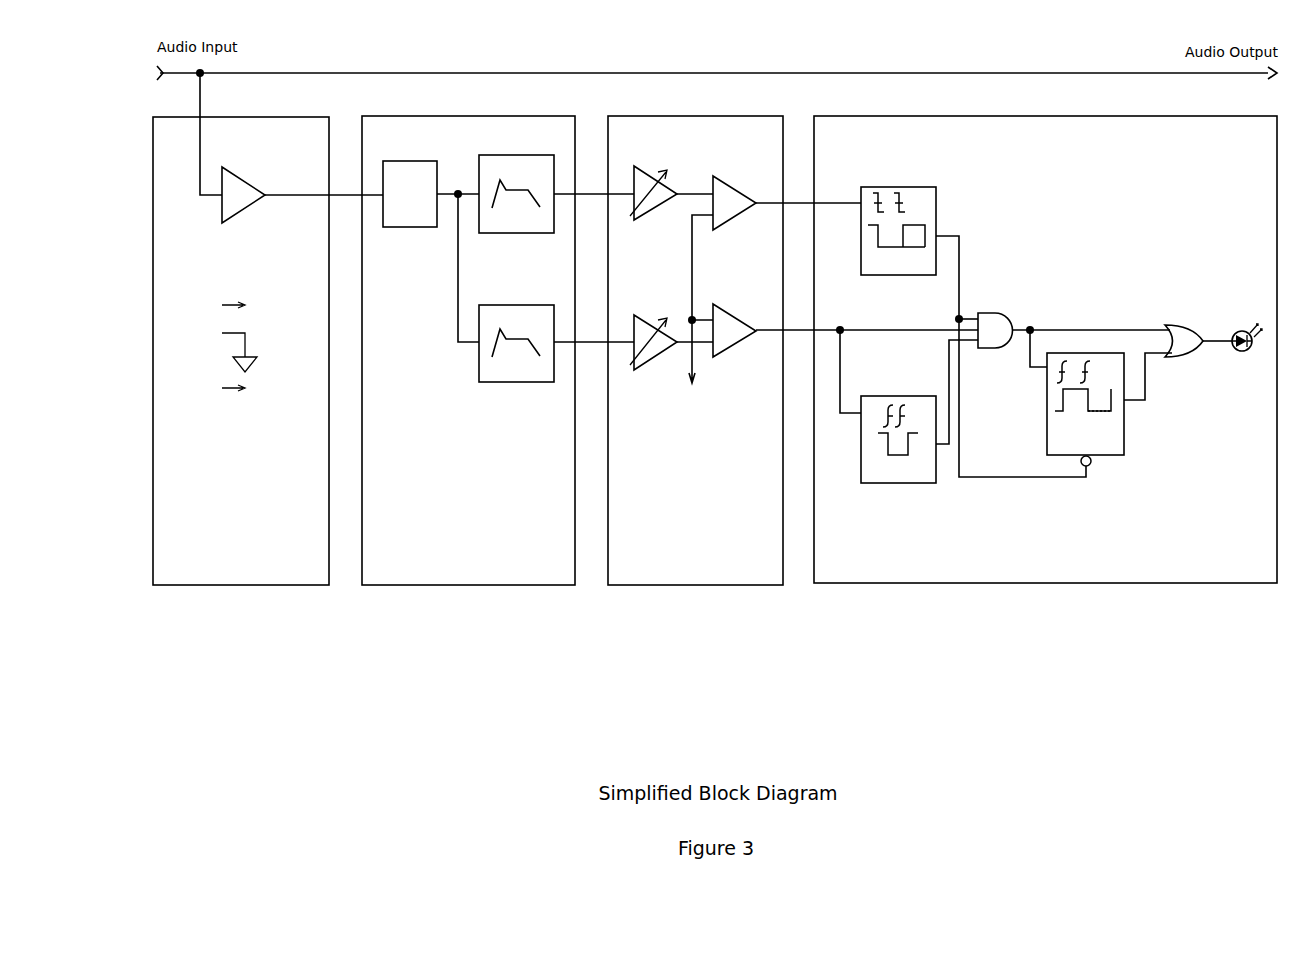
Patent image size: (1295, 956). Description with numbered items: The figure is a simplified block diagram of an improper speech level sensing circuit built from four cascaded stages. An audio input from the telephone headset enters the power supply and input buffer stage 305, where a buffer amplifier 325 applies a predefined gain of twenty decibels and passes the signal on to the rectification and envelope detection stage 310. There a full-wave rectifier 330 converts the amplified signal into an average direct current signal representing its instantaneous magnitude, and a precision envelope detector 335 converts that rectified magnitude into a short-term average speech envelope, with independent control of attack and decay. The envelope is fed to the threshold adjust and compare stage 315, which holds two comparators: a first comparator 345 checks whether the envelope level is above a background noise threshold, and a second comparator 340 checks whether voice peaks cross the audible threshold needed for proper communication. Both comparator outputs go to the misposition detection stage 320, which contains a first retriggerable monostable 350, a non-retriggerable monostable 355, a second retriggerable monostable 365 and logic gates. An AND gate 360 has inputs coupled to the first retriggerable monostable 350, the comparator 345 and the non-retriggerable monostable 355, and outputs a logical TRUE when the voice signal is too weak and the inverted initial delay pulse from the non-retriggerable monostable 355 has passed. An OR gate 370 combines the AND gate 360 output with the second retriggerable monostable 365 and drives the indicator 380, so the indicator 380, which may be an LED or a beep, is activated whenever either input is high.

The power supply and input buffer stage 305 is at (215, 587).
The rectification and envelope detection stage 310 is at (450, 587).
The threshold adjust and compare stage 315 is at (705, 587).
The misposition detection stage 320 is at (957, 586).
The buffer amplifier 325 is at (222, 212).
The full-wave rectifier 330 is at (418, 228).
The precision envelope detector 335 is at (490, 235).
The second comparator 340 is at (725, 180).
The first comparator 345 is at (730, 308).
The first retriggerable monostable 350 is at (937, 209).
The non-retriggerable monostable 355 is at (888, 486).
The AND gate 360 is at (1013, 323).
The second retriggerable monostable 365 is at (1126, 447).
The OR gate 370 is at (1172, 324).
The indicator 380 is at (1244, 353).